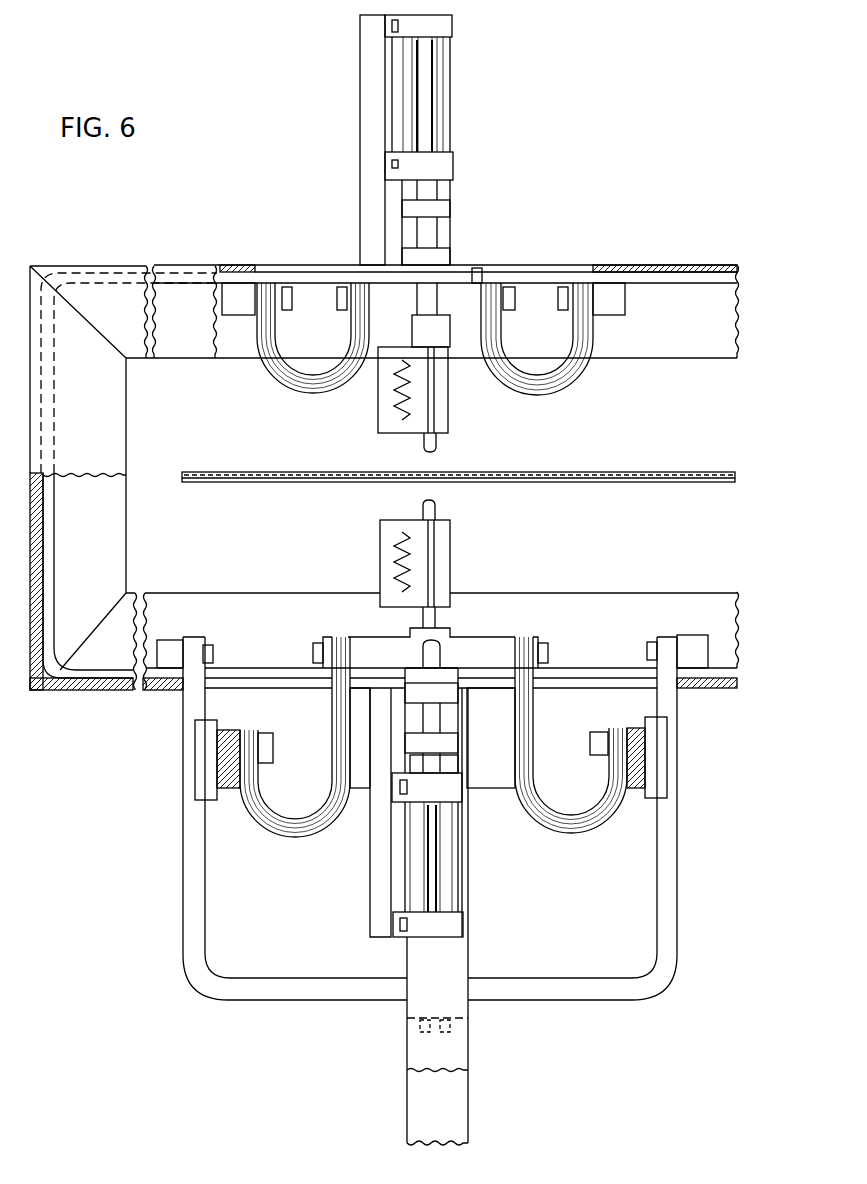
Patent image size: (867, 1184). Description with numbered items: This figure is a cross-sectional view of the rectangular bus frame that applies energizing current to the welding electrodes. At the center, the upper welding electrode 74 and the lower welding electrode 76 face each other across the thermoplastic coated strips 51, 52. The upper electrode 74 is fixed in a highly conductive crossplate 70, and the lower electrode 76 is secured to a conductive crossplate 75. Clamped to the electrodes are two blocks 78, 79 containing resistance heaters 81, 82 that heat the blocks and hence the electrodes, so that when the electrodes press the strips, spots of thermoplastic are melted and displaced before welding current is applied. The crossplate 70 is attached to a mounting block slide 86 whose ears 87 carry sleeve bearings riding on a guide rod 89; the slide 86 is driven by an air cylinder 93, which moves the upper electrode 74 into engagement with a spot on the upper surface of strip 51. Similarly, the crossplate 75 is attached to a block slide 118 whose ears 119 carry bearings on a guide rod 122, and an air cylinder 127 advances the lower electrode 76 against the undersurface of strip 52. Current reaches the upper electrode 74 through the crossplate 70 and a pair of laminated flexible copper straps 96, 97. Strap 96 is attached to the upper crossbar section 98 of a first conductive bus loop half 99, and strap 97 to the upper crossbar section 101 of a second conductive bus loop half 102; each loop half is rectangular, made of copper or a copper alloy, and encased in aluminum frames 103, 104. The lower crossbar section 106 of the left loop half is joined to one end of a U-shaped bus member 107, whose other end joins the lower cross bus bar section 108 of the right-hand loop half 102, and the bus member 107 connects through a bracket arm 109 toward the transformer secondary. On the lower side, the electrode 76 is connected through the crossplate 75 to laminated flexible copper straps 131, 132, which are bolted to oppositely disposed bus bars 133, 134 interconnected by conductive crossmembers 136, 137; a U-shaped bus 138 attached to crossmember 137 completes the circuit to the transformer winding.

The strip 51 is at (259, 470).
The strip 52 is at (556, 481).
The crossplate 70 is at (470, 274).
The upper welding electrode 74 is at (438, 446).
The crossplate 75 is at (462, 642).
The lower welding electrode 76 is at (437, 511).
The block 78 is at (380, 431).
The block 79 is at (380, 520).
The resistance heater 81 is at (394, 406).
The resistance heater 82 is at (398, 555).
The mounting block slide 86 is at (402, 229).
The ears 87 is at (438, 250).
The guide rod 89 is at (413, 116).
The air cylinder 93 is at (450, 100).
The laminated flexible copper strap 96 is at (284, 384).
The laminated flexible copper strap 97 is at (572, 381).
The upper crossbar section 98 is at (228, 268).
The first conductive bus loop half 99 is at (57, 528).
The upper crossbar section 101 is at (625, 277).
The second conductive bus loop half 102 is at (712, 288).
The aluminum frame 103 is at (95, 379).
The aluminum frame 104 is at (672, 267).
The lower crossbar section 106 is at (106, 683).
The U-shaped bus member 107 is at (190, 901).
The lower cross bus bar section 108 is at (723, 681).
The bracket arm 109 is at (413, 1043).
The block slide 118 is at (453, 758).
The ears 119 is at (447, 737).
The guide rod 122 is at (425, 655).
The air cylinder 127 is at (463, 881).
The laminated flexible copper strap 131 is at (279, 834).
The laminated flexible copper strap 132 is at (581, 834).
The bus bar 133 is at (241, 735).
The bus bar 134 is at (631, 738).
The conductive crossmember 136 is at (357, 796).
The conductive crossmember 137 is at (478, 788).
The U-shaped bus 138 is at (463, 1111).